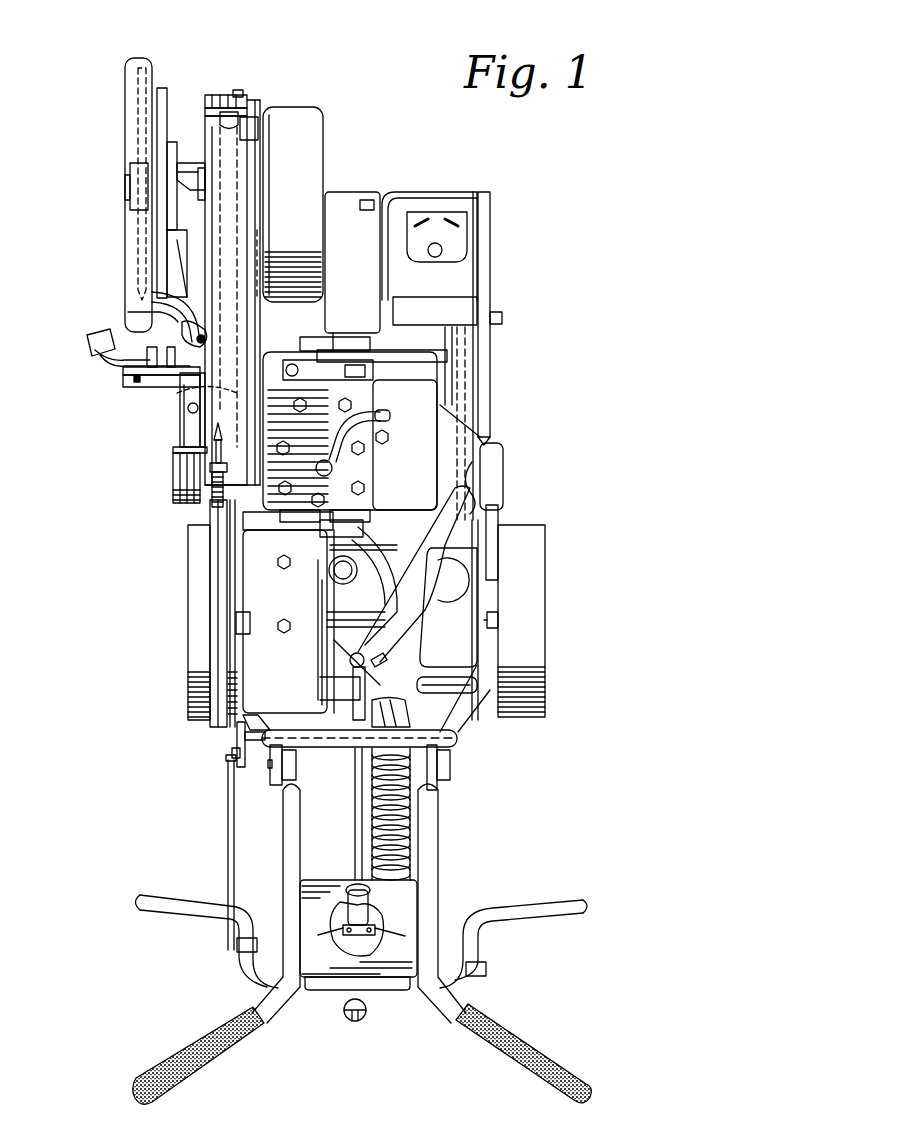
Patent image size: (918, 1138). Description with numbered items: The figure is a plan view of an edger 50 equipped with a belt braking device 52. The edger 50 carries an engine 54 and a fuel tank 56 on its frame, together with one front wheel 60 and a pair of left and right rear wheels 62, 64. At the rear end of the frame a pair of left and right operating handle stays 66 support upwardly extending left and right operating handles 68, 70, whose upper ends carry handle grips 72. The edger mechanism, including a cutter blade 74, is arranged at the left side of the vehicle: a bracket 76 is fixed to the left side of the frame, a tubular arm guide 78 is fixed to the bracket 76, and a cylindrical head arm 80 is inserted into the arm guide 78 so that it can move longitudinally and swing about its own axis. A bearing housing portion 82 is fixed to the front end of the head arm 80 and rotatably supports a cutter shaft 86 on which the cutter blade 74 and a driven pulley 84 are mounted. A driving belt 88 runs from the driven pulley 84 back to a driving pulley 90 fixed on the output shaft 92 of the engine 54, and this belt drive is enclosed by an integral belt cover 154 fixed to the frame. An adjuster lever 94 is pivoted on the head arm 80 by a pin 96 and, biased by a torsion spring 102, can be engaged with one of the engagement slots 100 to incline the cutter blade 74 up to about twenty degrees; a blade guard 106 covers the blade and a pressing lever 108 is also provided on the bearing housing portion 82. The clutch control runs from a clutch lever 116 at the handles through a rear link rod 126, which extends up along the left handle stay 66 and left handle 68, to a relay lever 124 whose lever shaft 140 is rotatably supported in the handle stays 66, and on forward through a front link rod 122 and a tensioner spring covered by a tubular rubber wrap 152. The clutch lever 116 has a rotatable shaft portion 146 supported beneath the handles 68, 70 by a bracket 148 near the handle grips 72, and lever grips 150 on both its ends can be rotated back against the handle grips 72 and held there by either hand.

The edger 50 is at (558, 490).
The belt braking device 52 is at (236, 84).
The engine 54 is at (416, 478).
The fuel tank 56 is at (456, 648).
The front wheel 60 is at (303, 107).
The left rear wheel 62 is at (188, 685).
The right rear wheel 64 is at (548, 618).
The operating handle stays 66 is at (257, 716).
The left operating handle 68 is at (337, 826).
The right operating handle 70 is at (426, 833).
The handle grips 72 is at (227, 1050).
The cutter blade 74 is at (138, 94).
The bracket 76 is at (182, 402).
The tubular arm guide 78 is at (185, 426).
The head arm 80 is at (193, 245).
The bearing housing portion 82 is at (188, 173).
The driven pulley 84 is at (258, 134).
The cutter shaft 86 is at (130, 173).
The driving belt 88 is at (248, 258).
The driving pulley 90 is at (187, 450).
The output shaft 92 is at (196, 386).
The adjuster lever 94 is at (100, 350).
The pin 96 is at (128, 312).
The engagement slots 100 is at (142, 385).
The torsion spring 102 is at (190, 300).
The blade guard 106 is at (148, 58).
The pressing lever 108 is at (204, 108).
The clutch lever 116 is at (248, 980).
The front link rod 122 is at (208, 506).
The relay lever 124 is at (232, 750).
The rear link rod 126 is at (225, 812).
The lever shaft 140 is at (254, 768).
The shaft portion 146 is at (300, 990).
The bracket 148 is at (390, 992).
The lever grips 150 is at (163, 897).
The tubular rubber wrap 152 is at (212, 615).
The belt cover 154 is at (212, 96).